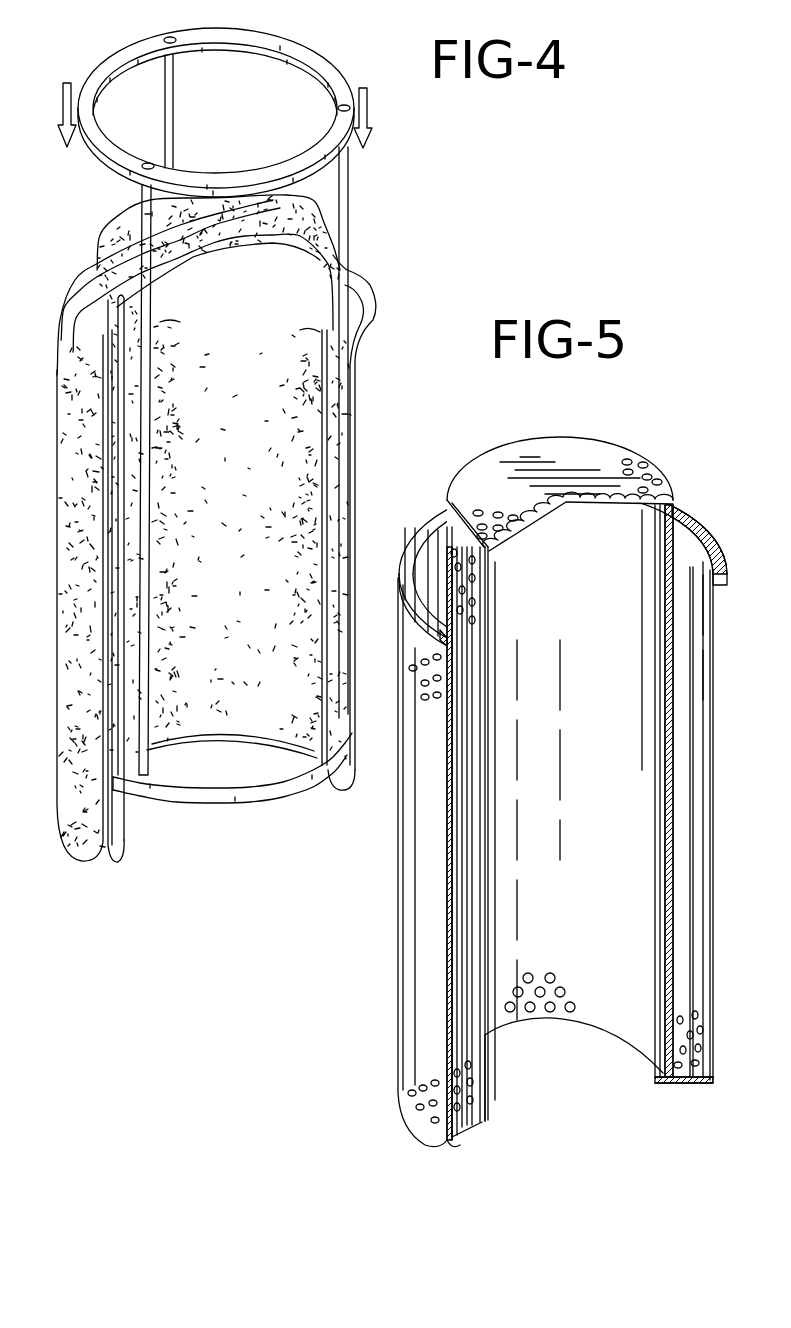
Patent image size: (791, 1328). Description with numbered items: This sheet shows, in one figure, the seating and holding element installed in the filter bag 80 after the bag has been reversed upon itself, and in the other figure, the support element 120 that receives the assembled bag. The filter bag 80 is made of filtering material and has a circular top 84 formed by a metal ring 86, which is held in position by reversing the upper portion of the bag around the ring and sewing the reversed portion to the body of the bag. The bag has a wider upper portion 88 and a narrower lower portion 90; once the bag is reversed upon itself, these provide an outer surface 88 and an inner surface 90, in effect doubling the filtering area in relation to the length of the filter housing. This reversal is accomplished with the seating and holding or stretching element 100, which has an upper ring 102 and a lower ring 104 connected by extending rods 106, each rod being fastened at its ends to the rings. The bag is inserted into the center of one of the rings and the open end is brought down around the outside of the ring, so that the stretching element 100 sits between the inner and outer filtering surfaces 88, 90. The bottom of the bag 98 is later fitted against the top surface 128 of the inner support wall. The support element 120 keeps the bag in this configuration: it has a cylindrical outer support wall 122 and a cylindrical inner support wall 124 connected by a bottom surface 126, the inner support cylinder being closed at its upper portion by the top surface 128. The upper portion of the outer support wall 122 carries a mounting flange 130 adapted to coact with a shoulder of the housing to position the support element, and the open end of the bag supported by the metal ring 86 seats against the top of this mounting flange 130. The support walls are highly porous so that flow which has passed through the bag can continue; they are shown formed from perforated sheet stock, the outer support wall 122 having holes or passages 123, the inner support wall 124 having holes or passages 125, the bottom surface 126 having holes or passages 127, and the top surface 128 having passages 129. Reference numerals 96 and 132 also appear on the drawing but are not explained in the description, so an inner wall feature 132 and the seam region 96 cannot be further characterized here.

In FIG. 4, the filter bag 80 is at (378, 284).
In FIG. 4, the circular top 84 is at (82, 323).
In FIG. 4, the metal ring 86 is at (378, 316).
In FIG. 4, the outer surface 88 is at (60, 600).
In FIG. 4, the inner surface 90 is at (123, 574).
In FIG. 4, the cuff seam band 96 is at (312, 340).
In FIG. 4, the bottom of the bag 98 is at (125, 226).
In FIG. 4, the stretching element 100 is at (336, 70).
In FIG. 4, the upper ring 102 is at (96, 72).
In FIG. 4, the lower ring 104 is at (225, 805).
In FIG. 4, the extending rods 106 is at (175, 115).
In FIG. 5, the support element 120 is at (674, 410).
In FIG. 5, the outer support wall 122 is at (446, 912).
In FIG. 5, the holes or passages 123 is at (423, 686).
In FIG. 5, the inner support wall 124 is at (478, 925).
In FIG. 5, the holes or passages 125 is at (472, 617).
In FIG. 5, the bottom surface 126 is at (455, 1148).
In FIG. 5, the holes or passages 127 is at (474, 1122).
In FIG. 5, the top surface 128 is at (563, 457).
In FIG. 5, the passages 129 is at (498, 515).
In FIG. 5, the mounting flange 130 is at (697, 520).
In FIG. 5, the inner wall 132 is at (716, 600).